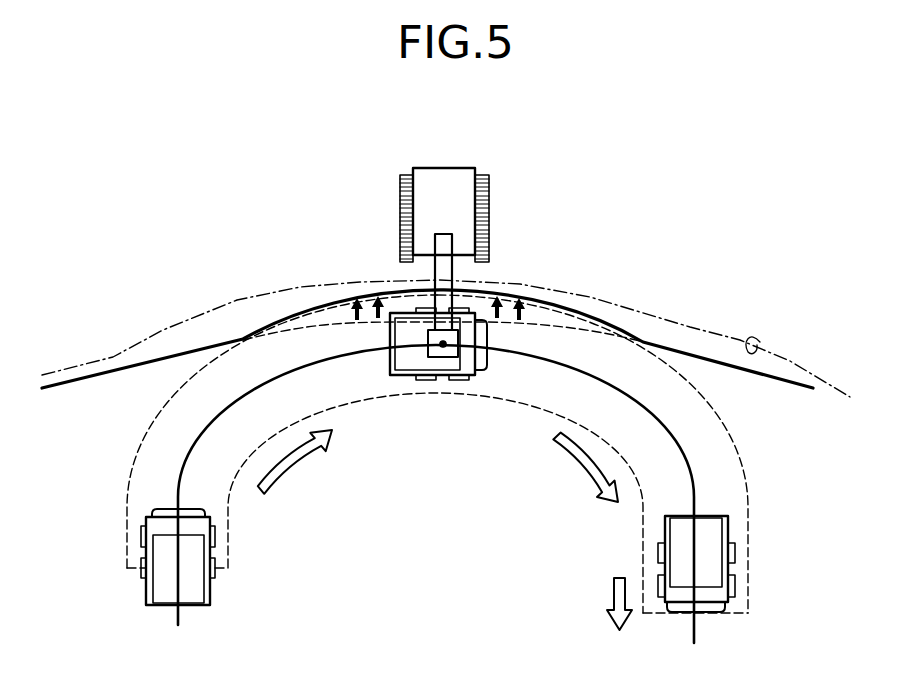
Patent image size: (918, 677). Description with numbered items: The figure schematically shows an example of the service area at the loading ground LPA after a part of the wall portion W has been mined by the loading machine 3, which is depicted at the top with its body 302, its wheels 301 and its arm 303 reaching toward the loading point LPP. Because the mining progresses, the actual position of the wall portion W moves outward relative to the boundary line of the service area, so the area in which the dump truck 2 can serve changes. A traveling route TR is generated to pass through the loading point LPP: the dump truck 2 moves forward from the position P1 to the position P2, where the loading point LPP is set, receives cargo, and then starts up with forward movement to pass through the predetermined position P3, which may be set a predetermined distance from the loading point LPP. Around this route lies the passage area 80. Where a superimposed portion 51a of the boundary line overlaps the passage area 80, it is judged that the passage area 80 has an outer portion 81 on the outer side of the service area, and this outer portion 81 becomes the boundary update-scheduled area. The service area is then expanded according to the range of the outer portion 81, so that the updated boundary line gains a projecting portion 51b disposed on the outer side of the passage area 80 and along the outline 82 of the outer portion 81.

The dump truck 2 is at (145, 588).
The loading machine 3 is at (438, 214).
The wheels of parking robot 301 is at (398, 183).
The body of parking robot 302 is at (431, 168).
The arm of parking robot 303 is at (452, 233).
The superimposed portion 51a is at (570, 328).
The projecting portion 51b is at (283, 315).
The passage area 80 is at (468, 427).
The outer portion 81 is at (603, 317).
The outline of the outer portion 82 is at (538, 295).
The wall portion W is at (757, 343).
The loading ground LPA is at (644, 170).
The traveling route TR is at (190, 458).
The position P1 is at (173, 580).
The position P2 is at (427, 385).
The position P3 is at (737, 551).
The loading point LPP is at (443, 348).